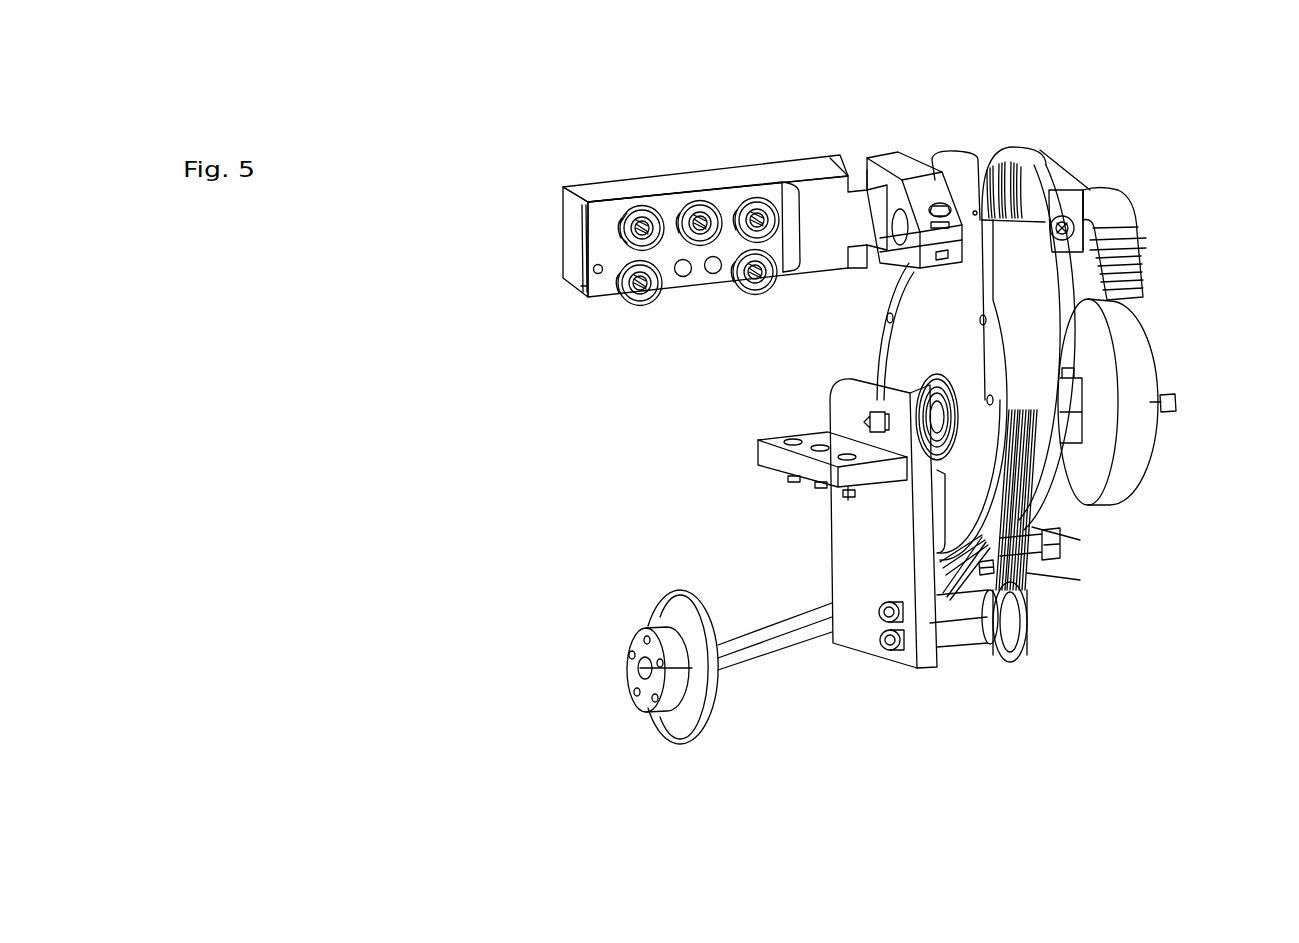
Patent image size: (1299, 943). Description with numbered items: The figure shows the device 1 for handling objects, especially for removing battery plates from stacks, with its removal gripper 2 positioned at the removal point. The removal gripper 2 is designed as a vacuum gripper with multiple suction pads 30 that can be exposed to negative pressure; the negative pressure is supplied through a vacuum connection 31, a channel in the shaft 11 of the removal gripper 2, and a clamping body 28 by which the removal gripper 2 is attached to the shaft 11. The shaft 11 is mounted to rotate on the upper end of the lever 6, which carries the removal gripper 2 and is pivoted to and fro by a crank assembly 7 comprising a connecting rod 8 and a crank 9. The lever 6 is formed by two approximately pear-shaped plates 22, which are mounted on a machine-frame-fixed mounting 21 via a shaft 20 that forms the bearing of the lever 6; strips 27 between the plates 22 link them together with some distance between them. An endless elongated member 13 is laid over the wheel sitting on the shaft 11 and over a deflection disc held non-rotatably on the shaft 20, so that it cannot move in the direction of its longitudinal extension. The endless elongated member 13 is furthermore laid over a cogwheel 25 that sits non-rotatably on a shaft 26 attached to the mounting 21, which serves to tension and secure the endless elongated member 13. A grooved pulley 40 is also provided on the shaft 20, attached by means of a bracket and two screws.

The device 1 is at (580, 597).
The removal gripper 2 is at (645, 181).
The lever 6 is at (1028, 390).
The crank assembly 7 is at (767, 690).
The connecting rod 8 is at (804, 625).
The crank 9 is at (699, 740).
The shaft 11 is at (893, 217).
The endless elongated member 13 is at (1015, 558).
The shaft 20 is at (863, 422).
The mounting 21 is at (877, 528).
The plates 22 is at (1062, 474).
The cogwheel 25 is at (985, 590).
The shaft 26 is at (957, 639).
The strips 27 is at (1024, 364).
The clamping body 28 is at (893, 153).
The suction pads 30 is at (618, 220).
The vacuum connection 31 is at (1139, 275).
The grooved pulley 40 is at (1161, 427).